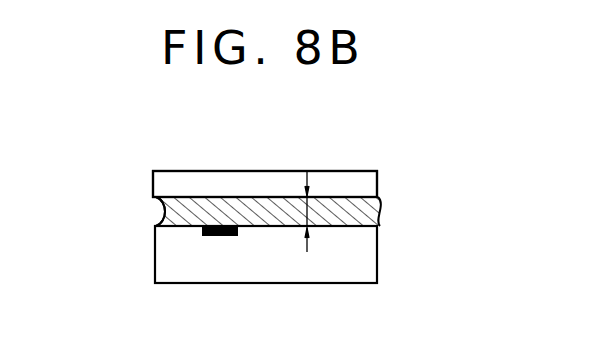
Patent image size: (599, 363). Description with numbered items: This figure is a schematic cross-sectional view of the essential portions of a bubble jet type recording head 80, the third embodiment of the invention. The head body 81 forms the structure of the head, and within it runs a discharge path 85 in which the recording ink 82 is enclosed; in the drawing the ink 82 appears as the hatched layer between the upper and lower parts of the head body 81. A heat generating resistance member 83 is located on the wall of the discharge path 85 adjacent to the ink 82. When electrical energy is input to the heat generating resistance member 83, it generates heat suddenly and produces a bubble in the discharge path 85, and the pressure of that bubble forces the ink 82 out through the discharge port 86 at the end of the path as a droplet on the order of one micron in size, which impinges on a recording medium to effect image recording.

The recording head 80 is at (362, 149).
The head body 81 is at (202, 170).
The recording ink 82 is at (380, 213).
The heat generating resistance member 83 is at (220, 236).
The discharge path 85 is at (310, 212).
The discharge port 86 is at (160, 213).